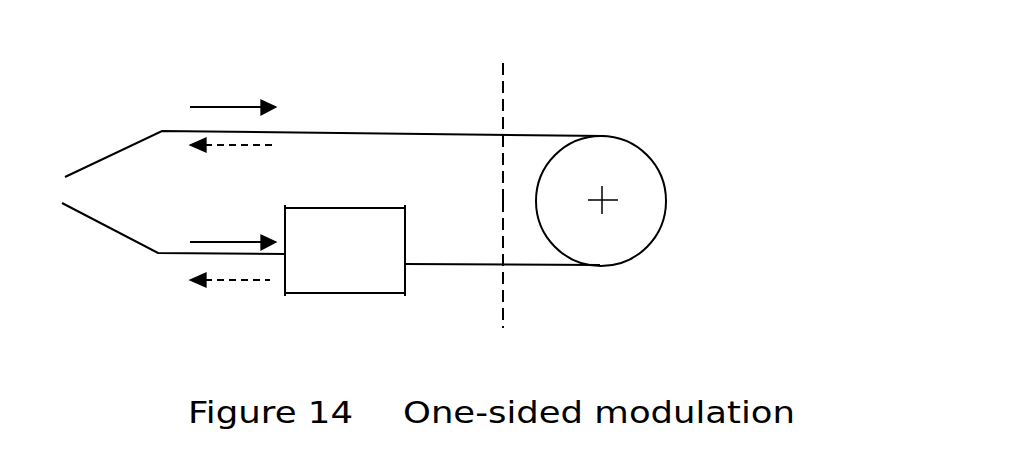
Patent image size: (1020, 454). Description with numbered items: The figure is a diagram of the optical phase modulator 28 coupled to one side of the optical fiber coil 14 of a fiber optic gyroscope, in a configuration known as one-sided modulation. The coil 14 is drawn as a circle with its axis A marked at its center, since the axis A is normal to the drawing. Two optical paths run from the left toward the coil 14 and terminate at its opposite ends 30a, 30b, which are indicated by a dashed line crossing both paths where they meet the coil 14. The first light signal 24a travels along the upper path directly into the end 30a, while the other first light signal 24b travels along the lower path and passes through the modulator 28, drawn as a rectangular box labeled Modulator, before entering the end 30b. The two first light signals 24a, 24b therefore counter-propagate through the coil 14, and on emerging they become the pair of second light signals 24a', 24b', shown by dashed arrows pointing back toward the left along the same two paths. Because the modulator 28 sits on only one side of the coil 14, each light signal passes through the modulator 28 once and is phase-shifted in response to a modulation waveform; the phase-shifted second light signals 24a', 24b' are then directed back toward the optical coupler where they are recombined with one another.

The optical fiber coil 14 is at (668, 182).
The first light signal 24a is at (335, 102).
The second light signal 24b' is at (304, 89).
The first light signal 24b is at (173, 278).
The second light signal 24a' is at (205, 313).
The optical phase modulator 28 is at (325, 293).
The first end of the coil 30a is at (505, 100).
The second end of the coil 30b is at (503, 290).
The axis of the coil A is at (607, 208).